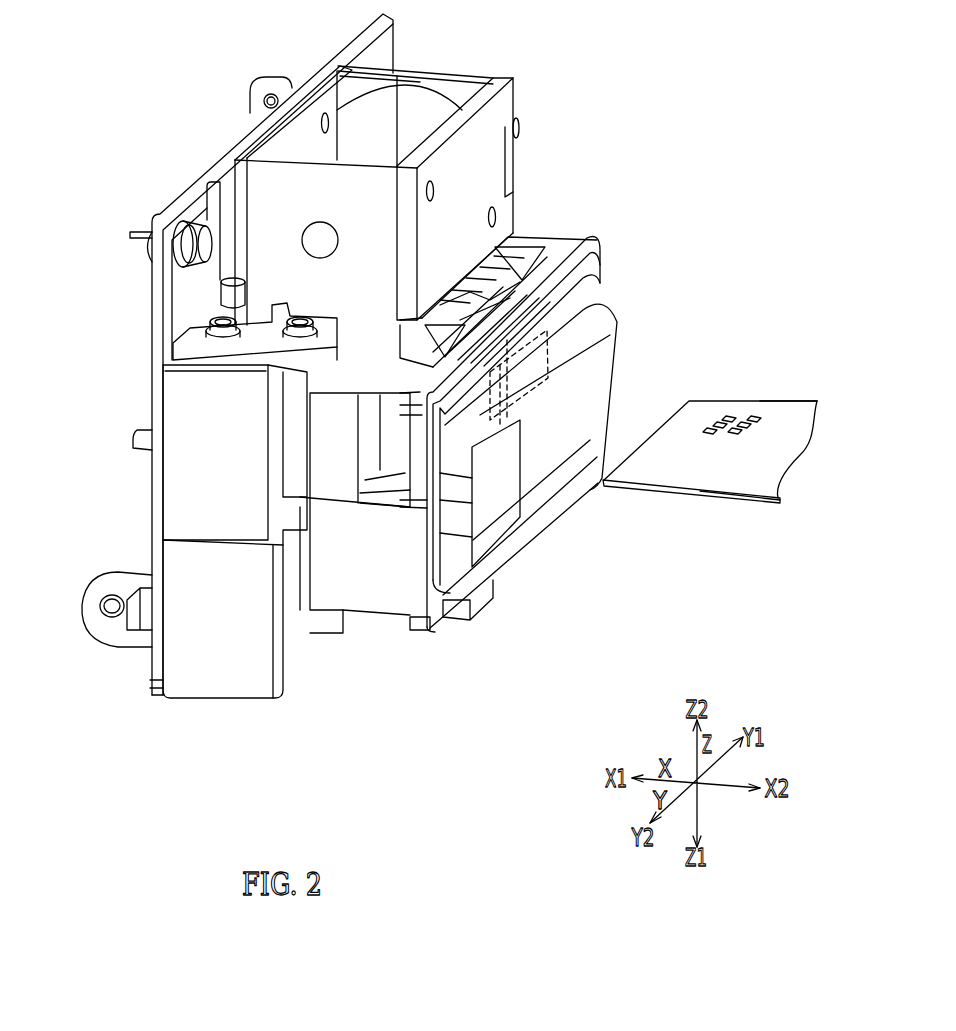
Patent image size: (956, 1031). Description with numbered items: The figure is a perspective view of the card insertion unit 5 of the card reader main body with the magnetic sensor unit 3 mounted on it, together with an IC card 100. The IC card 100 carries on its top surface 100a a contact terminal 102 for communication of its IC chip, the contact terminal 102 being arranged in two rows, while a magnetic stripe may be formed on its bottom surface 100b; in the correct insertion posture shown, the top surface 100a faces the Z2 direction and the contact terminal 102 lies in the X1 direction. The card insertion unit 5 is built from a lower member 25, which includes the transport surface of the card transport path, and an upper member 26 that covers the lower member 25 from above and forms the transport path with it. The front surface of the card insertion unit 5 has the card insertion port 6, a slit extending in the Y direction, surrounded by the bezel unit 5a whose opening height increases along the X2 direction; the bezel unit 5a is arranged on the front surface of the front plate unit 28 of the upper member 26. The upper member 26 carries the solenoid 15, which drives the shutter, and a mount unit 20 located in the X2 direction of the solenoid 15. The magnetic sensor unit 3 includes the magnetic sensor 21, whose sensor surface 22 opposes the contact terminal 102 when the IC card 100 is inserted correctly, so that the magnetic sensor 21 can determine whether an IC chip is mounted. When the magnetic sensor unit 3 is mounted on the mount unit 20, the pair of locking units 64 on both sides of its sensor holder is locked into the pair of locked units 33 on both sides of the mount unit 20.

The card insertion unit 5 is at (228, 143).
The solenoid 15 is at (418, 106).
The magnetic sensor unit 3 is at (536, 244).
The magnetic sensor 21 is at (506, 400).
The front plate unit 28 is at (588, 262).
The bezel unit 5a is at (573, 355).
The card insertion port 6 is at (557, 388).
The sensor surface 22 is at (521, 420).
The upper member 26 is at (222, 464).
The lower member 25 is at (222, 627).
The locked units 33 is at (374, 456).
The mount unit 20 is at (389, 481).
The locking unit 64 is at (374, 441).
The IC card 100 is at (766, 394).
The top surface 100a is at (795, 410).
The bottom surface 100b is at (743, 497).
The contact terminal 102 is at (755, 417).